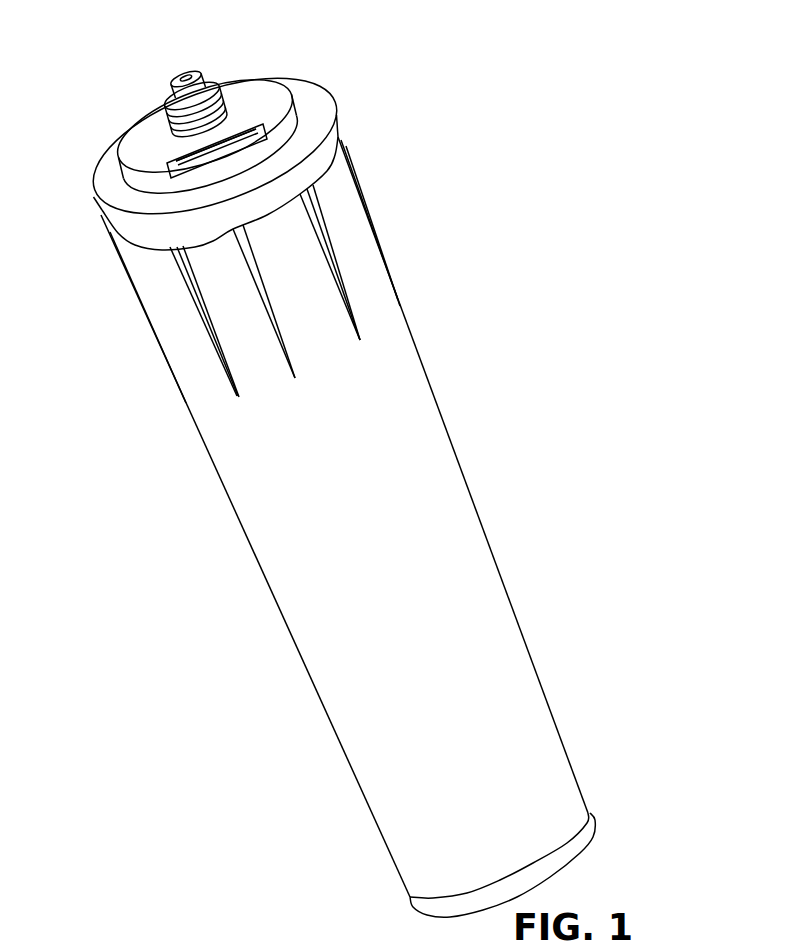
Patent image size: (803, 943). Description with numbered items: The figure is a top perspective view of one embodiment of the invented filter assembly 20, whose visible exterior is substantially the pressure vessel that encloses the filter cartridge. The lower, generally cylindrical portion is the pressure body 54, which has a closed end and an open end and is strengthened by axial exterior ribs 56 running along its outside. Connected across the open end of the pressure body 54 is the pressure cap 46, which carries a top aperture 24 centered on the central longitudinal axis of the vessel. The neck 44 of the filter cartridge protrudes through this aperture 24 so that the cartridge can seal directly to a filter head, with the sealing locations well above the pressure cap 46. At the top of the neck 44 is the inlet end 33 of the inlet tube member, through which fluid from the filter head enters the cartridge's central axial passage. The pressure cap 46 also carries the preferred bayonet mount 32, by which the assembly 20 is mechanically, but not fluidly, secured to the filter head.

The filter assembly 20 is at (332, 473).
The aperture 24 is at (221, 126).
The bayonet mount 32 is at (252, 139).
The inlet end 33 is at (189, 74).
The neck 44 is at (117, 155).
The pressure cap 46 is at (157, 134).
The pressure body 54 is at (470, 723).
The axial exterior ribs 56 is at (277, 335).